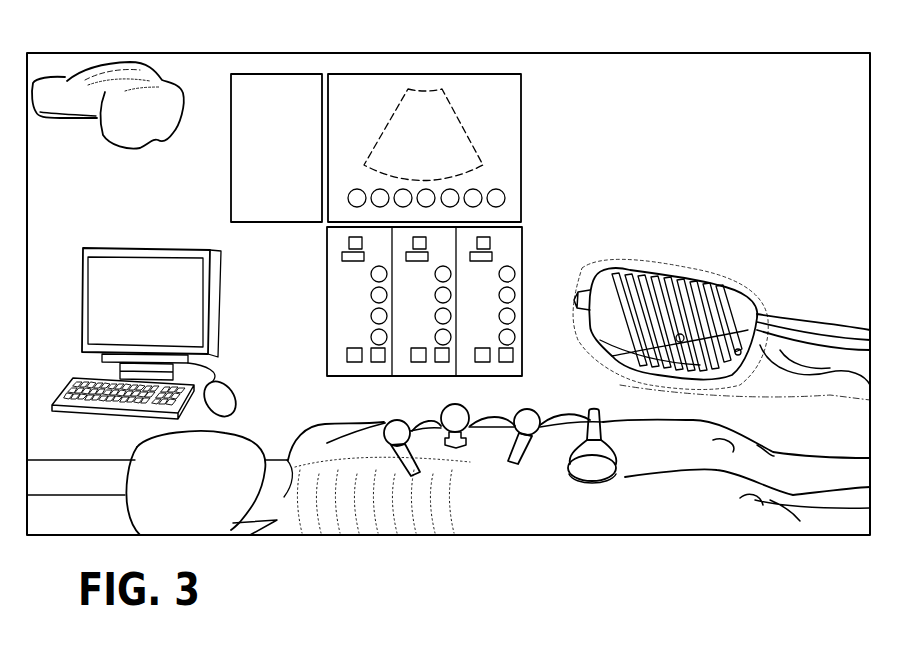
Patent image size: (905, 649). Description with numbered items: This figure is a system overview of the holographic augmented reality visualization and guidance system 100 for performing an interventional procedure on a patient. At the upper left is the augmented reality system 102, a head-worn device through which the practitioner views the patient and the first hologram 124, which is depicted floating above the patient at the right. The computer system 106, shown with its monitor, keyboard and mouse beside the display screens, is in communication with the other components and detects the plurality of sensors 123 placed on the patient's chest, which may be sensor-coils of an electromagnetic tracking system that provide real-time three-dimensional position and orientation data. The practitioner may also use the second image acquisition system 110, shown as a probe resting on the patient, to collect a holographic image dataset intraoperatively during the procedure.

The holographic augmented reality visualization and guidance system 100 is at (682, 221).
The augmented reality system 102 is at (115, 72).
The computer system 106 is at (143, 265).
The second image acquisition system 110 is at (625, 452).
The plurality of sensors 123 is at (530, 432).
The first hologram 124 is at (767, 313).